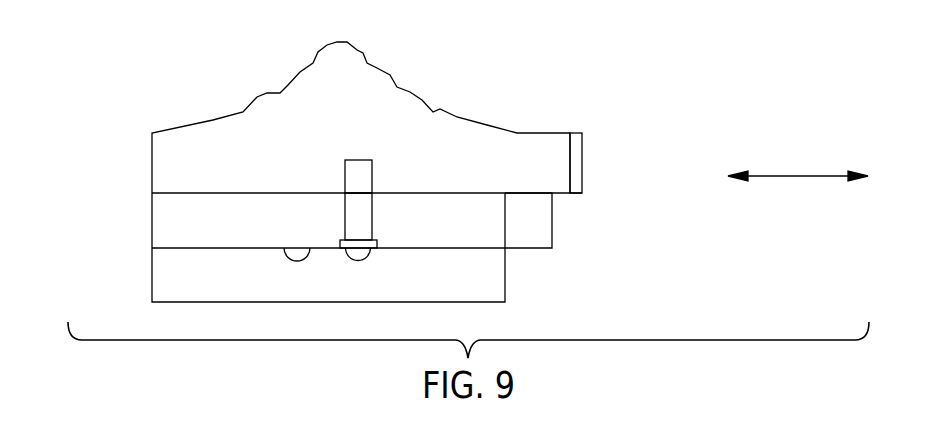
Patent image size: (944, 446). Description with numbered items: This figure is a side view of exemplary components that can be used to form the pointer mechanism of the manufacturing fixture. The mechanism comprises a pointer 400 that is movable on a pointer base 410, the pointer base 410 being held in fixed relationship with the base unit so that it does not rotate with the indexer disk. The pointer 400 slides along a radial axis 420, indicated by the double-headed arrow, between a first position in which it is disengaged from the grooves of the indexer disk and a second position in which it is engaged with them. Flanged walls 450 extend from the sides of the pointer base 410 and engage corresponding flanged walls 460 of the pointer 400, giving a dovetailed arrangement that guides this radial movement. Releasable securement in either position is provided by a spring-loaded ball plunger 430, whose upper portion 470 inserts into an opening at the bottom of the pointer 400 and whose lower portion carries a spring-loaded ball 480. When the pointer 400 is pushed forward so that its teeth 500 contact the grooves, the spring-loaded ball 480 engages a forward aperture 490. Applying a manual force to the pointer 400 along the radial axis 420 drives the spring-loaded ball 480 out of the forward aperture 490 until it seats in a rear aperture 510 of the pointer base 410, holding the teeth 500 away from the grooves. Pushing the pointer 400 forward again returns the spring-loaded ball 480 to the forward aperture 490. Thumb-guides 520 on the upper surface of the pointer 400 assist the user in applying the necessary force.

The pointer 400 is at (438, 100).
The pointer base 410 is at (143, 273).
The radial axis 420 is at (798, 177).
The spring-loaded ball plunger 430 is at (348, 217).
The flanged walls 450 is at (488, 238).
The flanged walls 460 is at (542, 225).
The upper portion 470 is at (367, 177).
The spring-loaded ball 480 is at (367, 227).
The forward aperture 490 is at (370, 256).
The teeth 500 is at (577, 163).
The rear aperture 510 is at (283, 256).
The thumb-guides 520 is at (276, 103).